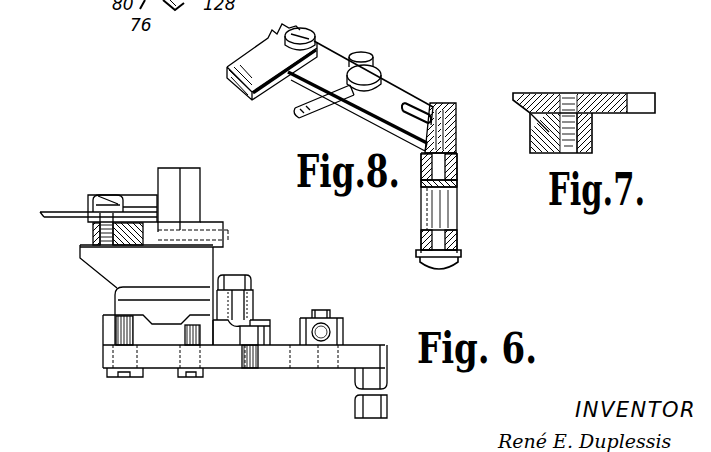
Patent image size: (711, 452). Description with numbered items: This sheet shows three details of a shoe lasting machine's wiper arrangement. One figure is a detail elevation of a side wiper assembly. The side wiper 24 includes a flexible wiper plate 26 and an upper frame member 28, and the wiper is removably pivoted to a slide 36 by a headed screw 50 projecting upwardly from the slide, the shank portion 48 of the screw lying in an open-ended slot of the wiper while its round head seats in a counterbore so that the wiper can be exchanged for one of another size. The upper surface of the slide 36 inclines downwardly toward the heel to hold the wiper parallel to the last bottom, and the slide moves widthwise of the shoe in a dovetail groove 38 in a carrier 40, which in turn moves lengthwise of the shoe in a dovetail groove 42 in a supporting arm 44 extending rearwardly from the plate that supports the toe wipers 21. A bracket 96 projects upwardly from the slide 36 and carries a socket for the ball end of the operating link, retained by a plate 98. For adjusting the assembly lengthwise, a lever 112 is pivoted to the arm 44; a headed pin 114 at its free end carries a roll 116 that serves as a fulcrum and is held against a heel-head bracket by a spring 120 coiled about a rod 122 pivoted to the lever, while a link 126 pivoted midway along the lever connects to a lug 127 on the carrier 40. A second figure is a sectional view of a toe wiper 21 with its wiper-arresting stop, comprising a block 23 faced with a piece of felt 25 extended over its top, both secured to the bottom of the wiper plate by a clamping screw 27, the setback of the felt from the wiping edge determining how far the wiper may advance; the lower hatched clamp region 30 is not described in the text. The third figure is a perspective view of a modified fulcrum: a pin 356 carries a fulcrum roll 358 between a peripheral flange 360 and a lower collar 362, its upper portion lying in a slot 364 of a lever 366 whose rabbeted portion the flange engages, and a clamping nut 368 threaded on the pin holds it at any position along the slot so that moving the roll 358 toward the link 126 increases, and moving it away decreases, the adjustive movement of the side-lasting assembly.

In FIG. 7, the toe wiper 21 is at (588, 93).
In FIG. 7, the block 23 is at (593, 136).
In FIG. 7, the felt 25 is at (530, 128).
In FIG. 7, the clamping screw 27 is at (582, 149).
In FIG. 6, the side wiper 24 is at (67, 228).
In FIG. 6, the flexible wiper plate 26 is at (42, 214).
In FIG. 6, the upper frame member 28 is at (127, 205).
In FIG. 6, the clamp base 30 is at (126, 242).
In FIG. 6, the slide 36 is at (224, 223).
In FIG. 6, the dovetail groove 38 is at (224, 240).
In FIG. 6, the carrier 40 is at (125, 305).
In FIG. 6, the dovetail groove 42 is at (162, 322).
In FIG. 6, the supporting arm 44 is at (103, 328).
In FIG. 6, the shank portion 48 is at (112, 203).
In FIG. 6, the headed screw 50 is at (107, 246).
In FIG. 6, the bracket 96 is at (168, 172).
In FIG. 6, the plate 98 is at (192, 179).
In FIG. 6, the lever 112 is at (282, 358).
In FIG. 6, the headed pin 114 is at (360, 419).
In FIG. 6, the roll 116 is at (362, 378).
In FIG. 6, the spring 120 is at (332, 315).
In FIG. 8, the spring 120 is at (320, 112).
In FIG. 6, the rod 122 is at (344, 328).
In FIG. 6, the link 126 is at (225, 350).
In FIG. 8, the link 126 is at (265, 70).
In FIG. 6, the lug 127 is at (255, 293).
In FIG. 8, the pin 356 is at (432, 167).
In FIG. 8, the fulcrum roll 358 is at (458, 204).
In FIG. 8, the peripheral flange 360 is at (451, 138).
In FIG. 8, the collar 362 is at (445, 268).
In FIG. 8, the slot 364 is at (414, 108).
In FIG. 8, the lever 366 is at (393, 82).
In FIG. 8, the clamping nut 368 is at (452, 106).